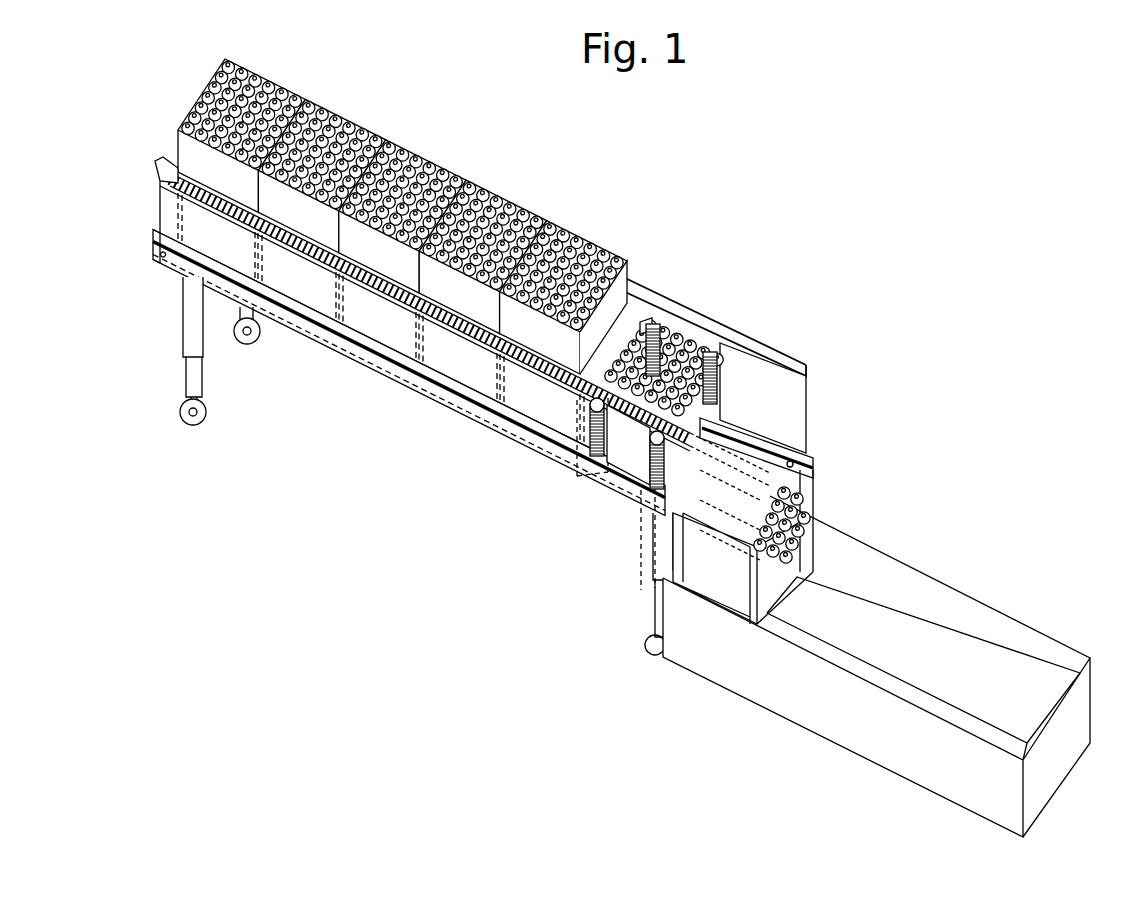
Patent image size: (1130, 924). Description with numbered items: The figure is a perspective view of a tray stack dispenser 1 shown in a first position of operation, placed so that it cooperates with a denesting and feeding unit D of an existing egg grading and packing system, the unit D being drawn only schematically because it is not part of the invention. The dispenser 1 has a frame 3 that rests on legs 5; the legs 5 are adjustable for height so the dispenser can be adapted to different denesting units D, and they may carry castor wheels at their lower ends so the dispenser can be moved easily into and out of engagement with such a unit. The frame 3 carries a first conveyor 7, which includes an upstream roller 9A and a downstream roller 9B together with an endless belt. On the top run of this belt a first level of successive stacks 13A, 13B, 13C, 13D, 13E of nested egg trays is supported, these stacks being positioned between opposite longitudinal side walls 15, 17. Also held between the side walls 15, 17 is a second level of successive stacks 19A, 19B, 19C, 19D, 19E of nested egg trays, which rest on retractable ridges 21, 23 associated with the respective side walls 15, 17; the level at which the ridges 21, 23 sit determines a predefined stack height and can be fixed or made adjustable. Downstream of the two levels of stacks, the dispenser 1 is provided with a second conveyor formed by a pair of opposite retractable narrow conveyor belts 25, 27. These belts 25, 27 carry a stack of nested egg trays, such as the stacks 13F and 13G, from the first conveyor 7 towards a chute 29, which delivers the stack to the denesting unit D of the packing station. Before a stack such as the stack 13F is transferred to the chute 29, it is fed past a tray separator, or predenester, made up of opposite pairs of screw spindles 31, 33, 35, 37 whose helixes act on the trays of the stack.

The tray stack dispenser 1 is at (795, 210).
The frame 3 is at (387, 350).
The legs 5 is at (240, 310).
The first conveyor 7 is at (362, 318).
The upstream roller 9A is at (172, 240).
The downstream roller 9B is at (585, 455).
The stack of nested egg trays 13A is at (538, 392).
The stack of nested egg trays 13B is at (465, 360).
The stack of nested egg trays 13C is at (340, 350).
The stack of nested egg trays 13D is at (298, 283).
The stack of nested egg trays 13E is at (180, 268).
The stack of nested egg trays 13F is at (687, 360).
The stack of nested egg trays 13G is at (785, 545).
The longitudinal side wall 15 is at (170, 208).
The longitudinal side wall 17 is at (778, 396).
The stack of nested egg trays 19A is at (572, 245).
The stack of nested egg trays 19B is at (505, 195).
The stack of nested egg trays 19C is at (412, 165).
The stack of nested egg trays 19D is at (327, 130).
The stack of nested egg trays 19E is at (218, 82).
The retractable ridge 21 is at (160, 175).
The retractable ridge 23 is at (648, 324).
The retractable narrow conveyor belt 25 is at (650, 540).
The retractable narrow conveyor belt 27 is at (812, 440).
The chute 29 is at (818, 470).
The screw spindle 31 is at (597, 440).
The screw spindle 33 is at (657, 462).
The screw spindle 35 is at (711, 352).
The screw spindle 37 is at (775, 350).
The denesting and feeding unit D is at (848, 722).